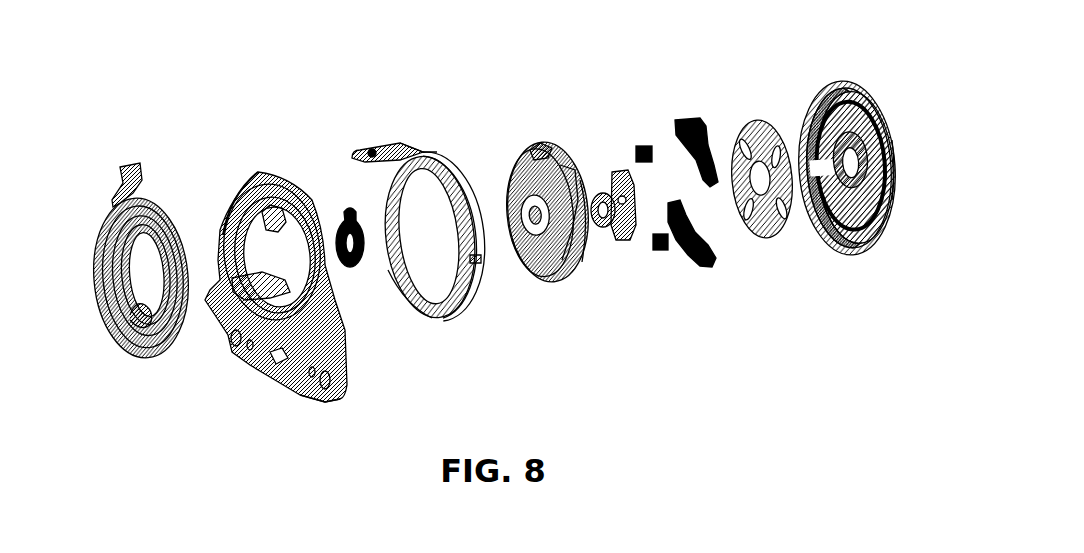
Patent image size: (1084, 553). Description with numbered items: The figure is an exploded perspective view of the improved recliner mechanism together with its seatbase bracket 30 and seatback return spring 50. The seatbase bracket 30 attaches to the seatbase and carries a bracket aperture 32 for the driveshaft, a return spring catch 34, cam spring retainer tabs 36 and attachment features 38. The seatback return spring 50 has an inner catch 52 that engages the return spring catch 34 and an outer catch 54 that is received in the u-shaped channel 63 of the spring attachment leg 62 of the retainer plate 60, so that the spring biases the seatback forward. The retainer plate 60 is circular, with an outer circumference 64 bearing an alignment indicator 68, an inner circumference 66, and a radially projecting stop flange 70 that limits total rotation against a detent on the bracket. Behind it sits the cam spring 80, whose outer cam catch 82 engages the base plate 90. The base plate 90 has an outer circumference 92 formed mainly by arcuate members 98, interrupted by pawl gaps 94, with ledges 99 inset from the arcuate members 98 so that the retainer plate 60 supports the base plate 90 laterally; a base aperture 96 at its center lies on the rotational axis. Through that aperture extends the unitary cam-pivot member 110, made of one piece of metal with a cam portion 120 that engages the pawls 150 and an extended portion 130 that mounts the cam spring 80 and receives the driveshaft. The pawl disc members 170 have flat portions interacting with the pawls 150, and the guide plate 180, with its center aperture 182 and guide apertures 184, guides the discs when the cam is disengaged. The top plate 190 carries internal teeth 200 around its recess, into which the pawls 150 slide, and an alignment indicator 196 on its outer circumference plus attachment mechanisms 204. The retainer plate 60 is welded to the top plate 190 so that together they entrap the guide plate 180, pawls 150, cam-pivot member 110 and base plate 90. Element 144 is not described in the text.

The seatbase bracket 30 is at (270, 350).
The bracket aperture 32 is at (226, 205).
The return spring catch 34 is at (235, 327).
The cam spring retainer tabs 36 is at (307, 217).
The attachment features 38 is at (328, 405).
The seatback return spring 50 is at (115, 203).
The inner catch 52 is at (118, 337).
The outer catch 54 is at (140, 167).
The retainer plate 60 is at (453, 300).
The spring attachment leg 62 is at (352, 157).
The u-shaped channel 63 is at (370, 148).
The outer circumference 64 is at (428, 322).
The inner circumference 66 is at (409, 236).
The alignment indicator 68 is at (437, 148).
The stop flange 70 is at (478, 262).
The cam spring 80 is at (351, 272).
The outer cam catch 82 is at (347, 205).
The base plate 90 is at (520, 157).
The outer circumference 92 is at (584, 264).
The pawl gaps 94 is at (543, 143).
The base aperture 96 is at (519, 262).
The arcuate members 98 is at (570, 165).
The ledges 99 is at (581, 237).
The unitary cam-pivot member 110 is at (620, 243).
The cam portion 120 is at (638, 238).
The extended portion 130 is at (600, 187).
The pawls 150 is at (692, 120).
The pawl disc members 170 is at (638, 148).
The guide plate 180 is at (754, 125).
The center aperture 182 is at (745, 232).
The guide apertures 184 is at (773, 130).
The top plate 190 is at (824, 85).
The alignment indicator 196 is at (872, 256).
The internal teeth 200 is at (856, 82).
The attachment mechanisms 204 is at (826, 240).
The cap 144 is at (876, 112).